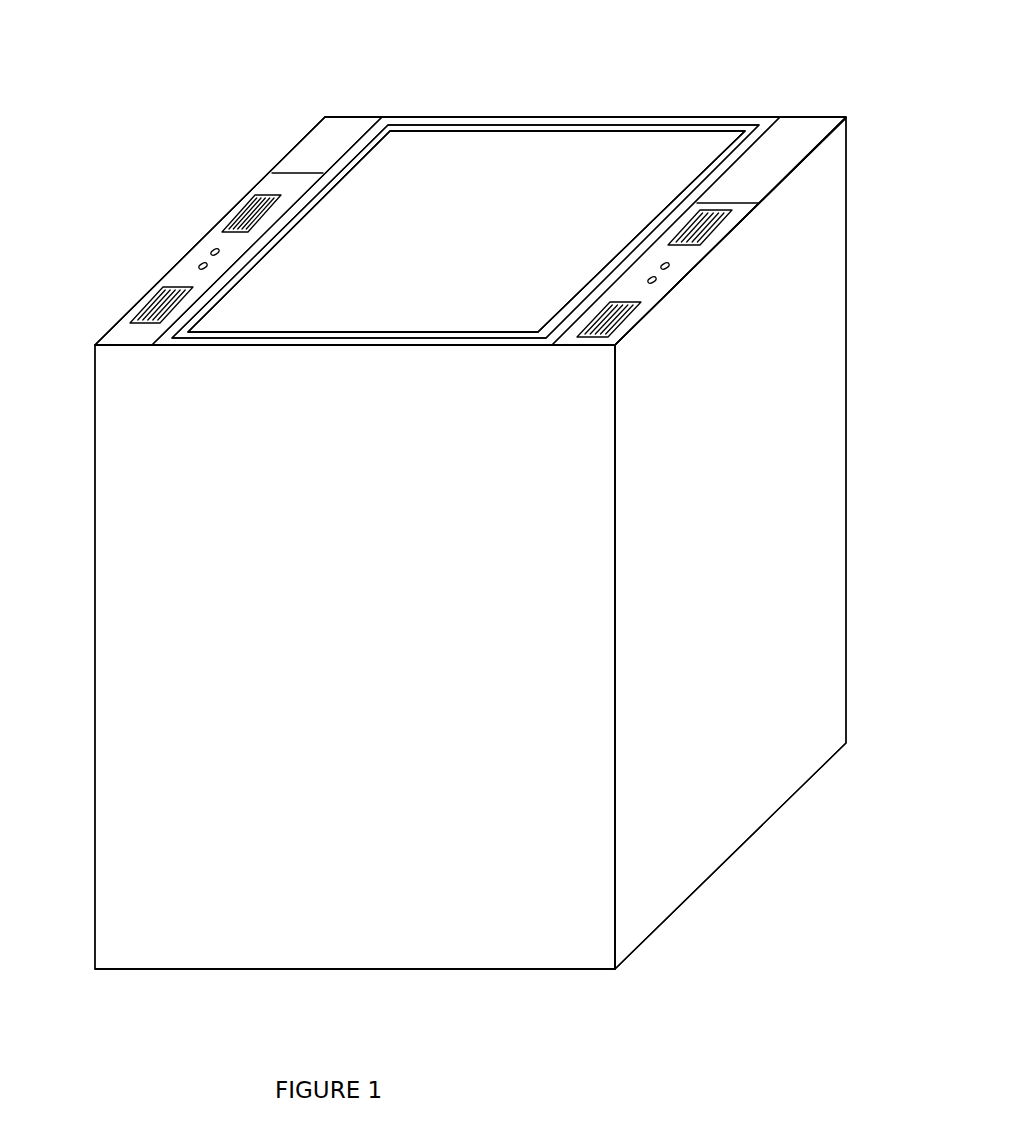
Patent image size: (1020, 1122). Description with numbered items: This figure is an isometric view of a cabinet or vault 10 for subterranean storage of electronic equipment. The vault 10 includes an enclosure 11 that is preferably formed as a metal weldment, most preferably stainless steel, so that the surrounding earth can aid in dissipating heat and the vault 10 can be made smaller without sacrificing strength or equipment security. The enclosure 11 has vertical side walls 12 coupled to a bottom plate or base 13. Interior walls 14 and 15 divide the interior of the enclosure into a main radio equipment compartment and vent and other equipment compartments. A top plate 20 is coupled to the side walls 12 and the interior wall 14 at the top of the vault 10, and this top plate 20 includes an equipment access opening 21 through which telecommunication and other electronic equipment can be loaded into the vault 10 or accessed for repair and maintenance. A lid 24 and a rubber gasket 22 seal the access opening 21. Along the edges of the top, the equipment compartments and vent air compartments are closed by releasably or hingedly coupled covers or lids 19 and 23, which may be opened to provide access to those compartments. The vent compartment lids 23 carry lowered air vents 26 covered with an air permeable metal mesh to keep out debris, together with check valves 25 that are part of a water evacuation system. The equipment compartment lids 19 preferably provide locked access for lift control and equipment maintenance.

The vault 10 is at (143, 87).
The enclosure 11 is at (318, 108).
The vertical side walls 12 is at (146, 532).
The bottom plate 13 is at (161, 969).
The interior wall 14 is at (366, 130).
The interior wall 15 is at (287, 173).
The equipment compartment lids 19 is at (343, 137).
The top plate 20 is at (435, 128).
The equipment access opening 21 is at (538, 150).
The rubber gasket 22 is at (614, 130).
The vent compartment lids 23 is at (273, 180).
The lid 24 is at (470, 137).
The check valves 25 is at (210, 252).
The air vents 26 is at (233, 213).